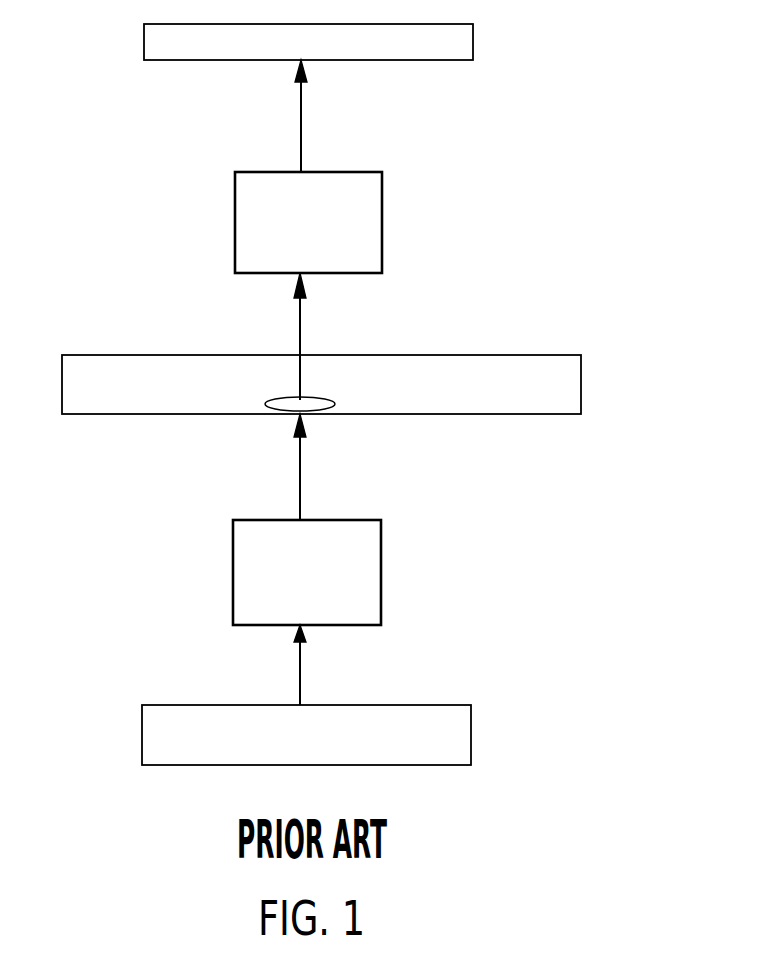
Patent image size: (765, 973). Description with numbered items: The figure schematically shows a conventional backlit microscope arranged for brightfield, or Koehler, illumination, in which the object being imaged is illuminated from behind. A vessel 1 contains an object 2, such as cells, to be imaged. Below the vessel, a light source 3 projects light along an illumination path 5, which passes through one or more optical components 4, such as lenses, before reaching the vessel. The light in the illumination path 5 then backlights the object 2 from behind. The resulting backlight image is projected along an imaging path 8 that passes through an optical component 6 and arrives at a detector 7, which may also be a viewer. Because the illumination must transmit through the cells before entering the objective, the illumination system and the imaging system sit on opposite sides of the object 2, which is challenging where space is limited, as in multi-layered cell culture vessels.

The vessel 1 is at (581, 384).
The object 2 is at (282, 415).
The light source 3 is at (142, 735).
The optical components 4 is at (381, 577).
The illumination path 5 is at (300, 490).
The optical component 6 is at (382, 235).
The detector 7 is at (473, 33).
The imaging path 8 is at (301, 137).